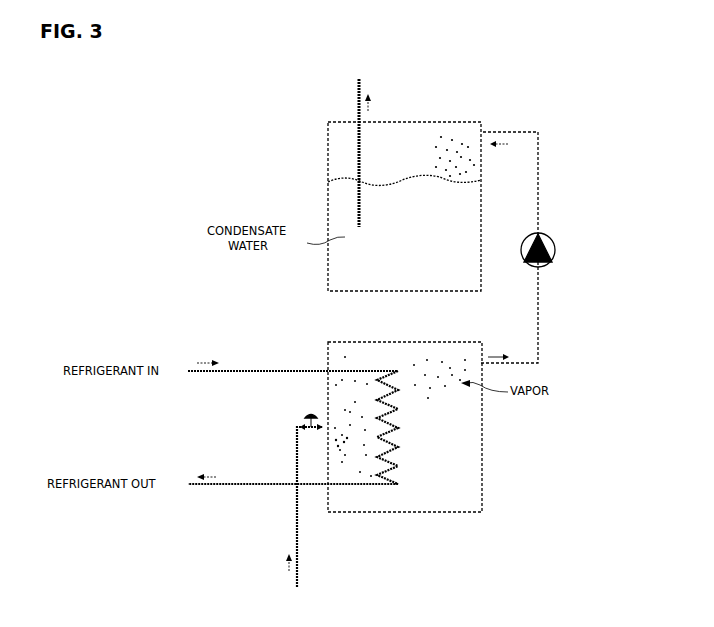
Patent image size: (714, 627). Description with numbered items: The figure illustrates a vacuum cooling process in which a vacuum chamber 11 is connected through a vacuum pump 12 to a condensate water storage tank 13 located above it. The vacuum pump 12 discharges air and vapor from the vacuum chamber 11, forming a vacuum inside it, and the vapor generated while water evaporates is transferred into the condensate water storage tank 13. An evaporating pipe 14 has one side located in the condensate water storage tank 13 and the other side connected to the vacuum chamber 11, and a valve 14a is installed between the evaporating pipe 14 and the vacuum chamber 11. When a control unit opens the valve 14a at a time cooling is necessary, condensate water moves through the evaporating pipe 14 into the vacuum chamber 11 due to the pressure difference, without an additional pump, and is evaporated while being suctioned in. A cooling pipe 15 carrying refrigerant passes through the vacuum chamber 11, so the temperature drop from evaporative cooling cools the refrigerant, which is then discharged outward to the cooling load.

The vacuum chamber 11 is at (482, 485).
The vacuum pump 12 is at (557, 251).
The condensate water storage tank 13 is at (437, 121).
The evaporating pipe 14 is at (354, 98).
The valve 14a is at (304, 418).
The cooling pipe 15 is at (275, 370).